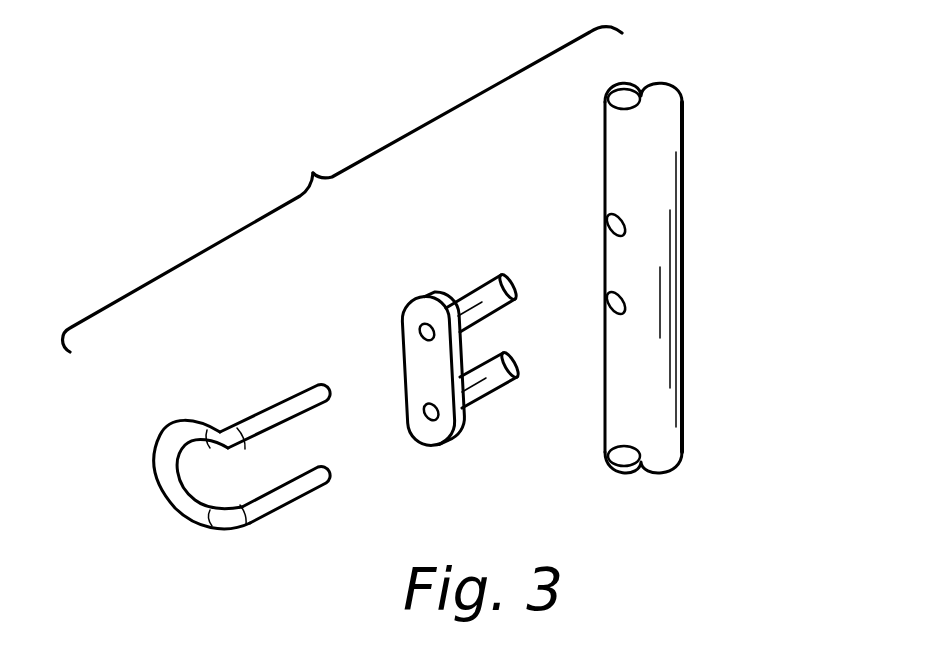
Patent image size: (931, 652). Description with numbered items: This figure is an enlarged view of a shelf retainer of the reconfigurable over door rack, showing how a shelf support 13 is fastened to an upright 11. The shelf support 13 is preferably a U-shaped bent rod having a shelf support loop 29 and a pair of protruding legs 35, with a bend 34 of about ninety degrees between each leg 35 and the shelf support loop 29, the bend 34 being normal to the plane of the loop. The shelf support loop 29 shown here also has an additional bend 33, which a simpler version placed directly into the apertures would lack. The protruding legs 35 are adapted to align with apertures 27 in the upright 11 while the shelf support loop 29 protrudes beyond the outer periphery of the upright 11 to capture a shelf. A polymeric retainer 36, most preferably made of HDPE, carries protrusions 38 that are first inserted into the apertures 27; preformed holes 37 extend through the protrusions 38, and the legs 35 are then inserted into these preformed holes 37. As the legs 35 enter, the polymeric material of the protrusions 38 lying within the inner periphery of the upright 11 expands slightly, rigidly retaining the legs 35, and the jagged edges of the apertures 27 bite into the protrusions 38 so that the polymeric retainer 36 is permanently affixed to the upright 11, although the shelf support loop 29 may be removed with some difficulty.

The upright 11 is at (657, 191).
The shelf support 13 is at (205, 326).
The apertures 27 is at (616, 225).
The shelf support loop 29 is at (226, 498).
The bend 33 is at (220, 533).
The bend 34 is at (233, 448).
The protruding legs 35 is at (277, 422).
The polymeric retainer 36 is at (468, 331).
The preformed holes 37 is at (425, 332).
The protrusions 38 is at (490, 305).